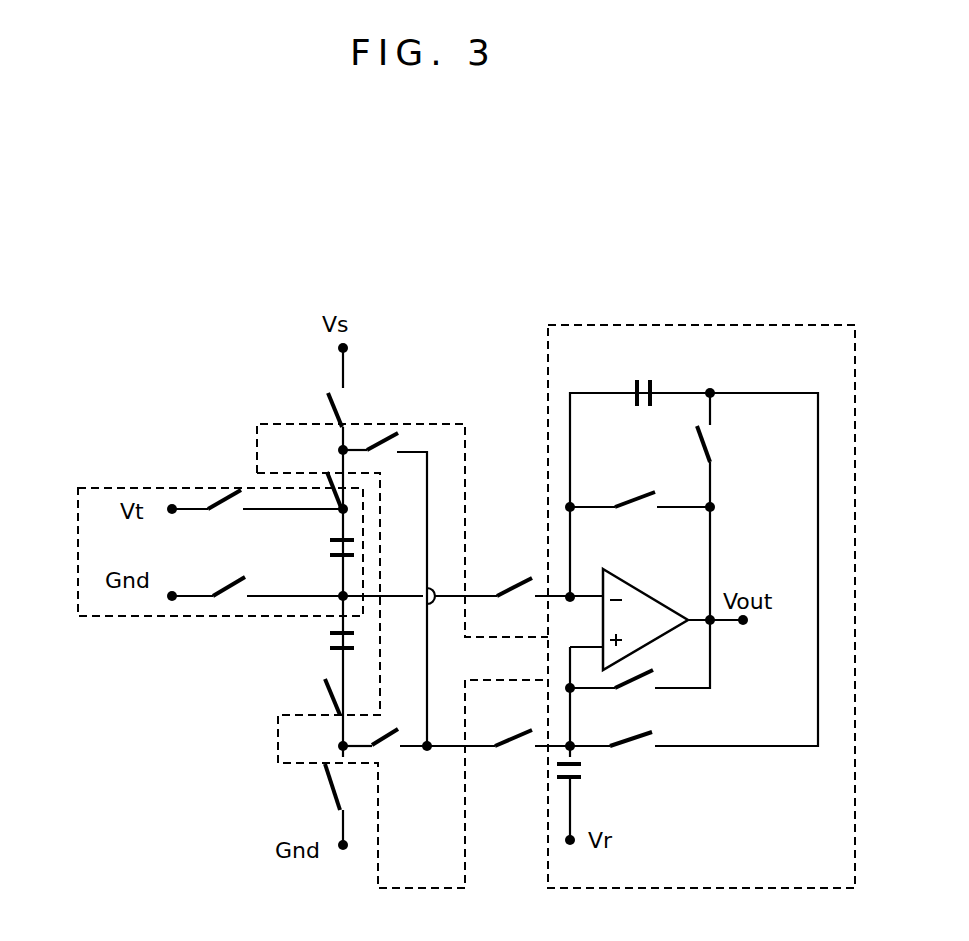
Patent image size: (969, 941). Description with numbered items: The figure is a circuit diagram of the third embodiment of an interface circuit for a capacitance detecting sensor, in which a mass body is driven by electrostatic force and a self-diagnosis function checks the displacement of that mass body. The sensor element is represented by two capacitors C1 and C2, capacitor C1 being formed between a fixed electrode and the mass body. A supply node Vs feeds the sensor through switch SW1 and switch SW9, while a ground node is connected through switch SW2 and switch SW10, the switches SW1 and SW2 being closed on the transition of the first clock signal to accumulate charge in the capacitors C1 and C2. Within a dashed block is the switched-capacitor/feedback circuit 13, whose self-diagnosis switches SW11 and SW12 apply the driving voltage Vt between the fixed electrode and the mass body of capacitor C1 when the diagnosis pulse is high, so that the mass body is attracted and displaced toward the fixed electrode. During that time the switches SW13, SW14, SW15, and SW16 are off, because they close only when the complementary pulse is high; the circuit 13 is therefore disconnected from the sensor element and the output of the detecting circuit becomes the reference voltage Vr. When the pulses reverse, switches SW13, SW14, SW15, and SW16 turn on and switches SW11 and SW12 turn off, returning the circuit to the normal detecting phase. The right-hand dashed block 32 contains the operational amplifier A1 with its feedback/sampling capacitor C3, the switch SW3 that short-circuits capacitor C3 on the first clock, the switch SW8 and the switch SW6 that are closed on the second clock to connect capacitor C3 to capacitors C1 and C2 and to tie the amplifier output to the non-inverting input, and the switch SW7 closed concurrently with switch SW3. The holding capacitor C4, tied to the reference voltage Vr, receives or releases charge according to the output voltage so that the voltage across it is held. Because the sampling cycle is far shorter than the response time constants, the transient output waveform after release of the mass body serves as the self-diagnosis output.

The switched-capacitor/feedback circuit 13 is at (128, 488).
The amplifier / integrator section 32 is at (670, 326).
The switch SW1 is at (328, 402).
The switch SW2 is at (330, 799).
The switch SW3 is at (624, 495).
The switch SW6 is at (652, 682).
The switch SW7 is at (641, 742).
The switch SW8 is at (703, 454).
The switch SW9 is at (382, 432).
The switch SW10 is at (387, 740).
The switch SW11 is at (224, 508).
The switch SW12 is at (228, 594).
The switch SW13 is at (327, 483).
The switch SW14 is at (328, 696).
The switch SW15 is at (518, 588).
The switch SW16 is at (521, 734).
The capacitor C1 is at (330, 548).
The capacitor C2 is at (330, 638).
The feedback/sampling capacitor C3 is at (640, 388).
The holding capacitor C4 is at (556, 770).
The operational amplifier A1 is at (638, 602).